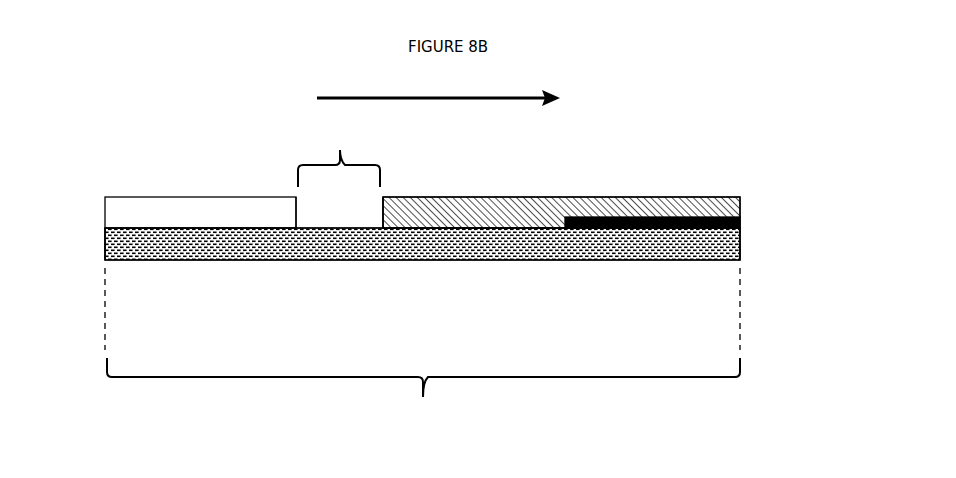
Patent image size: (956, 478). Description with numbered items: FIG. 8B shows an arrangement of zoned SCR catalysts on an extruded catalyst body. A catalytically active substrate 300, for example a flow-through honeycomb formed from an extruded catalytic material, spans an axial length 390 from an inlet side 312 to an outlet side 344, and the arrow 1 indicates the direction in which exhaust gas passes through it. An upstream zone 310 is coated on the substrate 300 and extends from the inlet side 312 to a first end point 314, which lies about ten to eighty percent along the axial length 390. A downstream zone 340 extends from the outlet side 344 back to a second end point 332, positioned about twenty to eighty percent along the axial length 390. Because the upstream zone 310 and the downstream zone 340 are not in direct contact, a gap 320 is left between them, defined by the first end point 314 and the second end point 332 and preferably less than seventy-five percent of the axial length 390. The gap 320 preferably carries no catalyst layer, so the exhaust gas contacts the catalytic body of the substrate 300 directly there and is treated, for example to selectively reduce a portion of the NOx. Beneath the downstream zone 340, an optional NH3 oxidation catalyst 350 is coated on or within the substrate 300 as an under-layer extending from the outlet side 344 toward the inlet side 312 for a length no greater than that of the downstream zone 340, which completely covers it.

The direction of travel arrow 1 is at (358, 95).
The catalytically active substrate 300 is at (192, 242).
The upstream zone 310 is at (225, 213).
The inlet side 312 is at (105, 242).
The first end point 314 is at (297, 215).
The gap 320 is at (339, 156).
The second end point 332 is at (382, 218).
The second layer 340 is at (568, 195).
The outlet side 344 is at (740, 245).
The conductive trace 350 is at (706, 217).
The axial length 390 is at (422, 350).